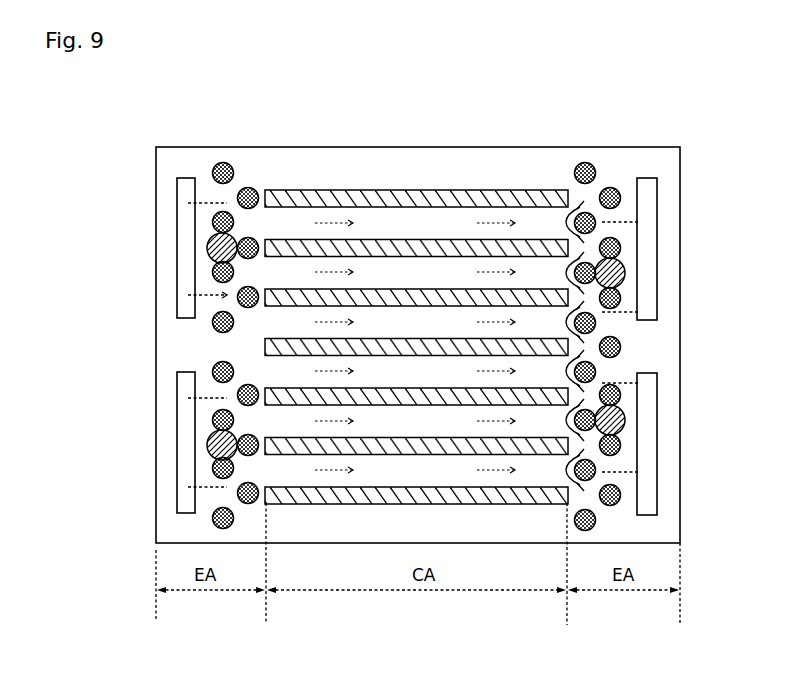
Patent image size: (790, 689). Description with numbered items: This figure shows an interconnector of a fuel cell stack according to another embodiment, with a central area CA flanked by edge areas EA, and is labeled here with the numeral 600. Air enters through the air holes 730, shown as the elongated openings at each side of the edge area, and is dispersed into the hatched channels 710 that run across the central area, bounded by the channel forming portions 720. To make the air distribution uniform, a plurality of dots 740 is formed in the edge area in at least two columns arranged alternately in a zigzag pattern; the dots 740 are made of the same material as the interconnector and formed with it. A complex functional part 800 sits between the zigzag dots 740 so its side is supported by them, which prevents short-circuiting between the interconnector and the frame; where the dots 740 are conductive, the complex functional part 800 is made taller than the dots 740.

The lower case 600 is at (413, 162).
The channels 710 is at (455, 465).
The channel forming portions 720 is at (322, 492).
The air holes 730 is at (185, 255).
The dots 740 is at (213, 418).
The complex functional part 800 is at (210, 450).